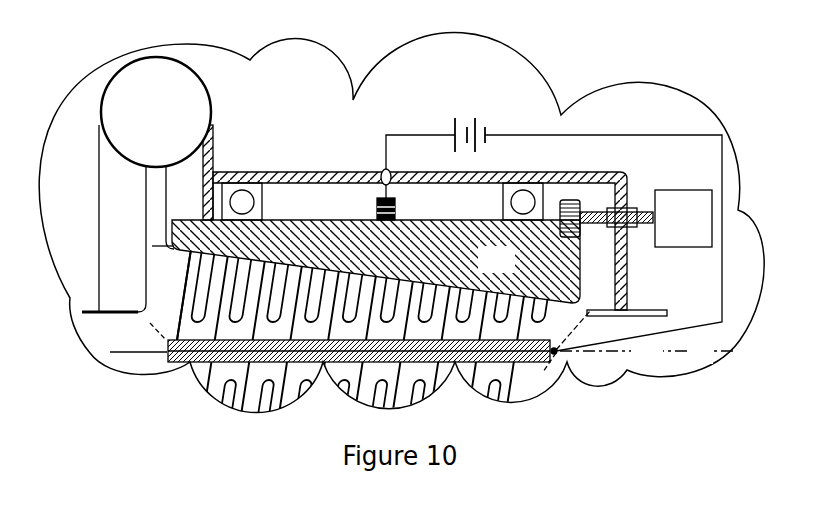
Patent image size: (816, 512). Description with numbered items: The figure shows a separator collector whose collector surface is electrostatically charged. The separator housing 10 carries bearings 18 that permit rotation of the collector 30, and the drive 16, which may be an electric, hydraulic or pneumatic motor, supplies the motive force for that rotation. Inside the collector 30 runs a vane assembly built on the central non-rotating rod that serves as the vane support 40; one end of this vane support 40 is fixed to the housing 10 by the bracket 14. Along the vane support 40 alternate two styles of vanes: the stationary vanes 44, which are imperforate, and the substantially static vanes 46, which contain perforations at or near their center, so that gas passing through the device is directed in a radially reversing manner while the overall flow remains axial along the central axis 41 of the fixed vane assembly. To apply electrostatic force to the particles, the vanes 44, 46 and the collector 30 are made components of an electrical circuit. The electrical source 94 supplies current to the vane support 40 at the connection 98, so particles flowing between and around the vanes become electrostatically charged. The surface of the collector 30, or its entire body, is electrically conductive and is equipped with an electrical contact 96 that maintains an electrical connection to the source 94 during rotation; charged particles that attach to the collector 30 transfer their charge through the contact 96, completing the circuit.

The separator housing 10 is at (288, 172).
The bracket 14 is at (150, 324).
The drive 16 is at (636, 218).
The bearings 18 is at (242, 190).
The collector 30 is at (376, 261).
The vane support 40 is at (170, 359).
The central axis 41 is at (423, 354).
The stationary vanes 44 is at (183, 308).
The substantially static vanes 46 is at (200, 287).
The electrical source 94 is at (471, 120).
The electrical contact 96 is at (383, 198).
The connection 98 is at (557, 352).